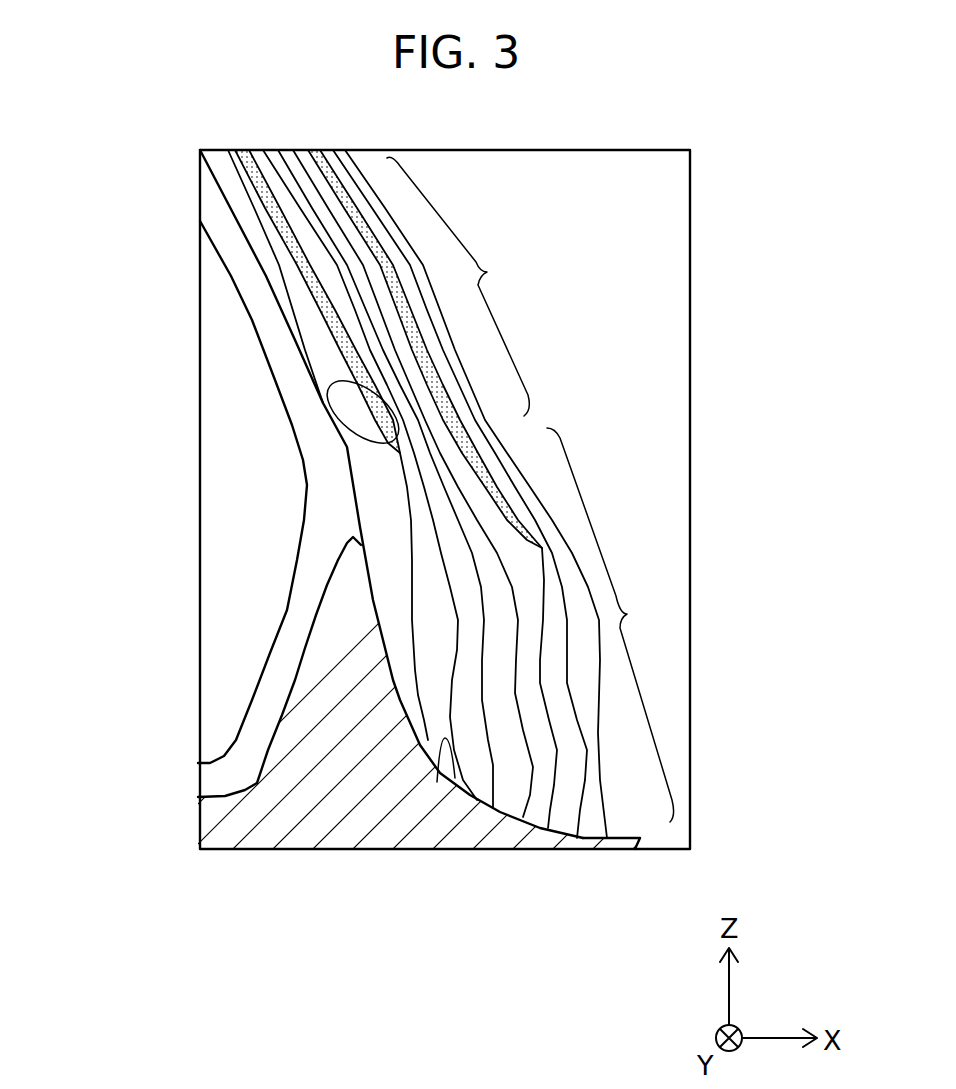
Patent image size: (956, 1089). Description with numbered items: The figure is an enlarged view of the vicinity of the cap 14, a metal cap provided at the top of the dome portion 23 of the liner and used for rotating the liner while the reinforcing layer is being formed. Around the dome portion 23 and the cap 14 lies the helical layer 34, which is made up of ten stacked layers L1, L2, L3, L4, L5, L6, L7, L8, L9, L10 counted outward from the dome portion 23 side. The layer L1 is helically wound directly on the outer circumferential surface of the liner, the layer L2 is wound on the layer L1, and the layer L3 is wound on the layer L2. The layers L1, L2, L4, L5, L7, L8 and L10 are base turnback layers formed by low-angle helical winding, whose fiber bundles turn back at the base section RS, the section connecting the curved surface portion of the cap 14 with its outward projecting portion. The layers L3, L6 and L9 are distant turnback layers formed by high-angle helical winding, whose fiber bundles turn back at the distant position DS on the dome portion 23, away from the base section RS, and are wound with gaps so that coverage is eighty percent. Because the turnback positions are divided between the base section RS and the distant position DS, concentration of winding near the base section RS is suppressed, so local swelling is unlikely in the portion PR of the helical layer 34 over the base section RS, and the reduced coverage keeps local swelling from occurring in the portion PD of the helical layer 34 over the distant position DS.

The helical layer 34 is at (578, 214).
The dome portion 23 is at (305, 403).
The cap 14 is at (357, 590).
The layer L1 is at (413, 695).
The layer L2 is at (440, 712).
The layer L3 is at (342, 350).
The layer L4 is at (480, 757).
The layer L5 is at (507, 790).
The layer L6 is at (378, 312).
The layer L7 is at (533, 807).
The layer L8 is at (573, 813).
The layer L9 is at (412, 272).
The layer L10 is at (603, 833).
The distant position DS is at (367, 440).
The base section RS is at (437, 750).
The portion of the helical layer formed on the distant position PD is at (460, 286).
The portion of the helical layer formed on the base section PR is at (610, 625).